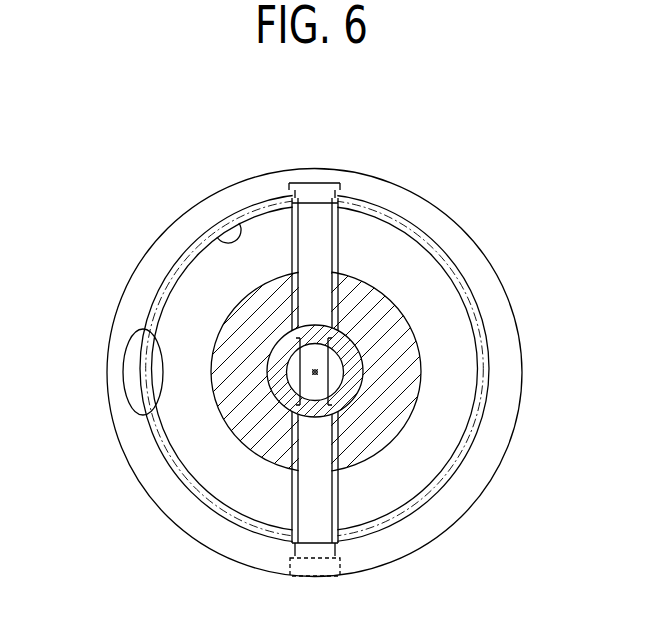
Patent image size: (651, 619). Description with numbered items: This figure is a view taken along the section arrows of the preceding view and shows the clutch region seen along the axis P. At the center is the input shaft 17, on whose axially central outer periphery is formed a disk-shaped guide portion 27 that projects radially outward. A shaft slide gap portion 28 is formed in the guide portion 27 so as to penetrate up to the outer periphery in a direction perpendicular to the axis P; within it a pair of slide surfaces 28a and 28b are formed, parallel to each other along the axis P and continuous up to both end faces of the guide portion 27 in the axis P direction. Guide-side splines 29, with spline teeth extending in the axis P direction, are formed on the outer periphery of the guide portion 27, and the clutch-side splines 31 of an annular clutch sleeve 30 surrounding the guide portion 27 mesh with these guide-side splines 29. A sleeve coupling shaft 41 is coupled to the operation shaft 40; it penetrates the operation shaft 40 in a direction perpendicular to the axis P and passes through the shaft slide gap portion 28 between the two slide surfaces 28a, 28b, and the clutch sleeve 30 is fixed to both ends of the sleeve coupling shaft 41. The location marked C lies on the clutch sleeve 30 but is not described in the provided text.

The input shaft 17 is at (402, 340).
The guide portion 27 is at (190, 254).
The shaft slide gap portion 28 is at (315, 337).
The slide surface 28a is at (300, 238).
The slide surface 28b is at (330, 238).
The guide-side splines 29 is at (153, 293).
The clutch sleeve 30 is at (188, 217).
The clutch-side splines 31 is at (238, 221).
The operation shaft 40 is at (350, 382).
The sleeve coupling shaft 41 is at (318, 438).
The communication hole C is at (123, 371).
The axis P is at (316, 372).